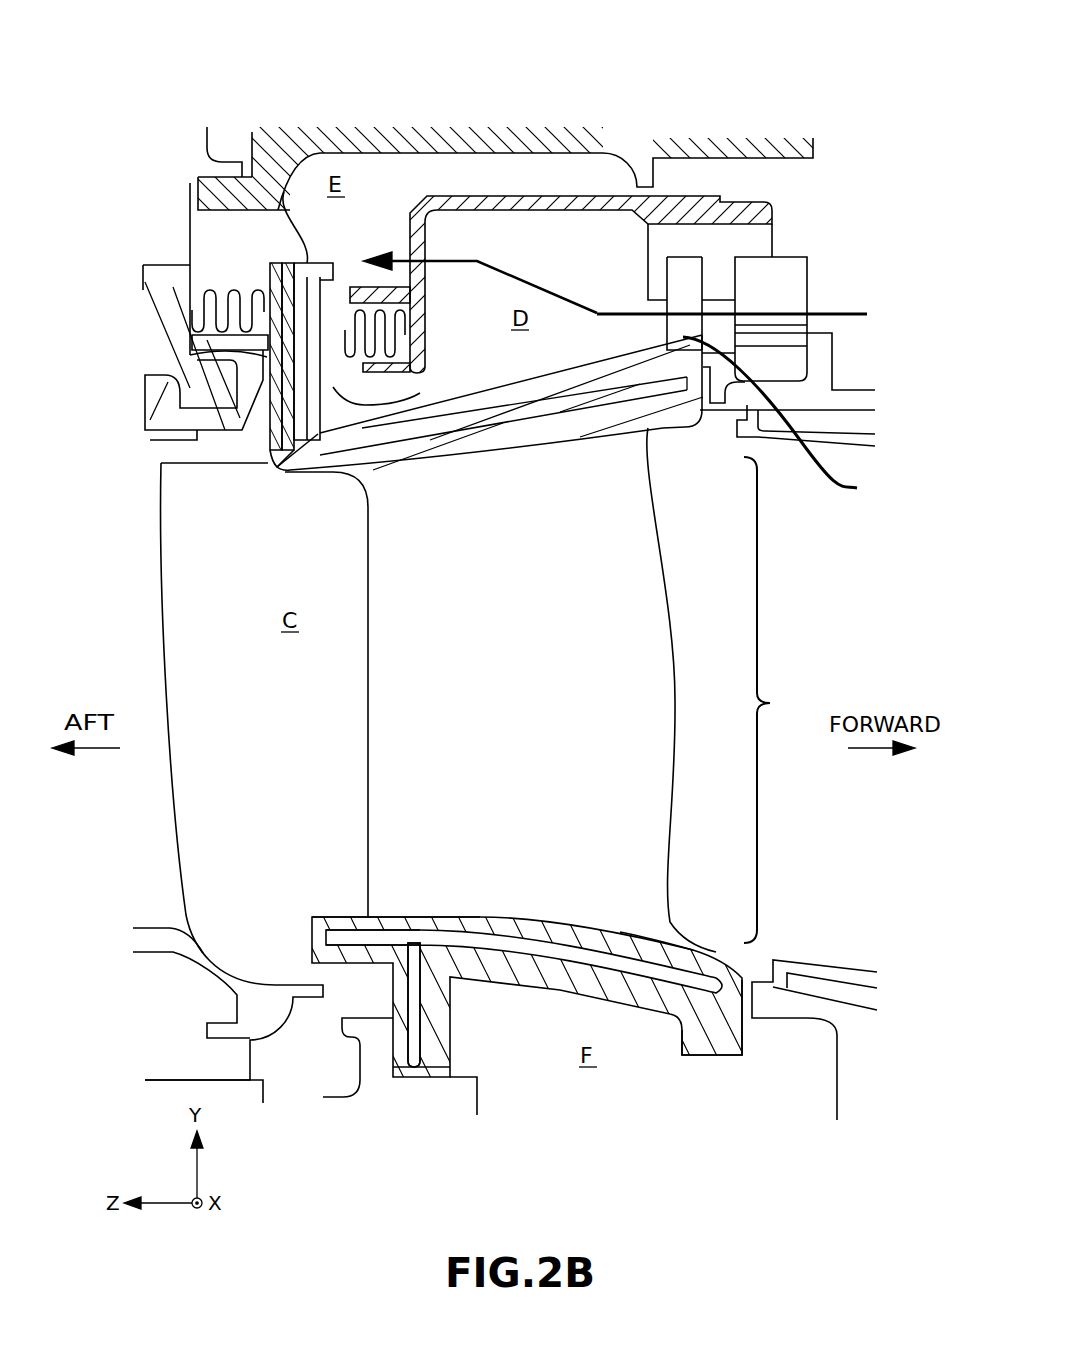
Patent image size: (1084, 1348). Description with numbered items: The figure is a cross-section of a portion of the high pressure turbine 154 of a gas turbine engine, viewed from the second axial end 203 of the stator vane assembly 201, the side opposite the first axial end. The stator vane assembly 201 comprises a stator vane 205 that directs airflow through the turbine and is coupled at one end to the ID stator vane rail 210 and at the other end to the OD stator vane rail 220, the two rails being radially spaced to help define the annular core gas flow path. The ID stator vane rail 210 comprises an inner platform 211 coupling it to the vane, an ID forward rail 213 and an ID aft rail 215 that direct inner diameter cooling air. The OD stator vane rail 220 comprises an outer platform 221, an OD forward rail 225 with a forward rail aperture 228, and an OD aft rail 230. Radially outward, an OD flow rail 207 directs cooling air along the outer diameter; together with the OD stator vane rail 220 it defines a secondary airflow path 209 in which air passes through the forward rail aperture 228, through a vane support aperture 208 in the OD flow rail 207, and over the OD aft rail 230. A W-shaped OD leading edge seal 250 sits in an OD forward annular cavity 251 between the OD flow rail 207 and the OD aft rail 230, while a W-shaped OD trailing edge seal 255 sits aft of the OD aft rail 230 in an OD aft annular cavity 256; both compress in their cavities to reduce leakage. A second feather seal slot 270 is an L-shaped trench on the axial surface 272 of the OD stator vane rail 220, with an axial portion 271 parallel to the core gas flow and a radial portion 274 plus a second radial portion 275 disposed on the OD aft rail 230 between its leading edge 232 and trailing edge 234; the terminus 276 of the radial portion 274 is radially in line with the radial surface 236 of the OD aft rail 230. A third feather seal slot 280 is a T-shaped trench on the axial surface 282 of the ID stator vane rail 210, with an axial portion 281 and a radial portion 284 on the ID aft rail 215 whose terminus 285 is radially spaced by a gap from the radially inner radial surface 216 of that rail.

The high pressure turbine 154 is at (150, 70).
The stator vane assembly 201 is at (781, 700).
The second axial end 203 is at (622, 1123).
The stator vane 205 is at (384, 727).
The OD flow rail 207 is at (570, 197).
The vane support aperture 208 is at (422, 247).
The secondary airflow path 209 is at (860, 313).
The ID stator vane rail 210 is at (716, 950).
The inner platform 211 is at (345, 917).
The ID forward rail 213 is at (718, 1050).
The ID aft rail 215 is at (442, 1033).
The radial surface 216 is at (428, 1080).
The OD stator vane rail 220 is at (682, 433).
The outer platform 221 is at (655, 432).
The OD forward rail 225 is at (789, 417).
The forward rail aperture 228 is at (683, 327).
The OD aft rail 230 is at (190, 355).
The leading edge 232 is at (340, 263).
The trailing edge 234 is at (271, 268).
The radial surface 236 is at (300, 220).
The OD leading edge seal 250 is at (410, 313).
The OD forward annular cavity 251 is at (408, 337).
The OD trailing edge seal 255 is at (232, 308).
The OD aft annular cavity 256 is at (222, 290).
The feather seal slot 270 is at (428, 450).
The axial portion 271 is at (586, 405).
The axial surface 272 is at (378, 457).
The radial portion 274 is at (288, 372).
The second radial portion 275 is at (310, 420).
The terminus 276 is at (288, 263).
The feather seal slot 280 is at (502, 943).
The axial portion 281 is at (442, 928).
The axial surface 282 is at (606, 942).
The radial portion 284 is at (413, 1047).
The terminus 285 is at (410, 1077).